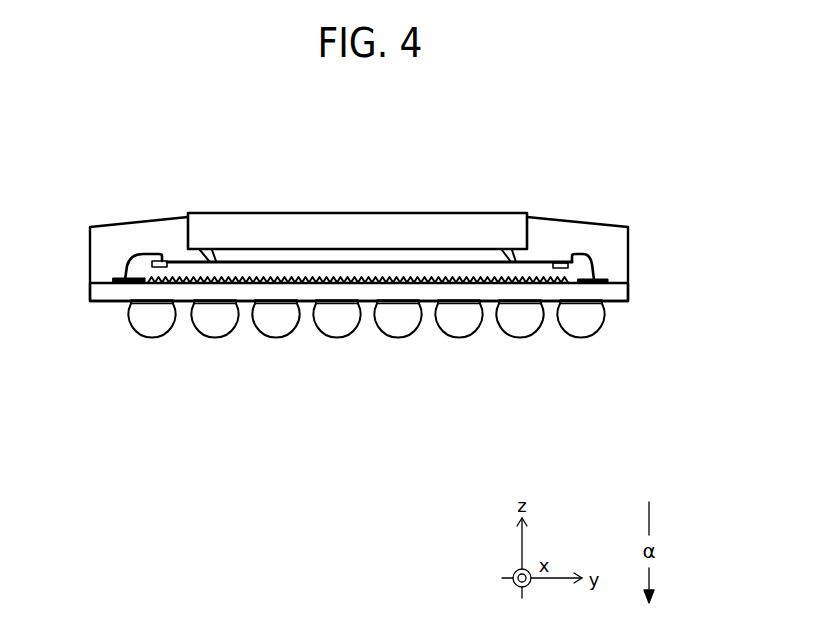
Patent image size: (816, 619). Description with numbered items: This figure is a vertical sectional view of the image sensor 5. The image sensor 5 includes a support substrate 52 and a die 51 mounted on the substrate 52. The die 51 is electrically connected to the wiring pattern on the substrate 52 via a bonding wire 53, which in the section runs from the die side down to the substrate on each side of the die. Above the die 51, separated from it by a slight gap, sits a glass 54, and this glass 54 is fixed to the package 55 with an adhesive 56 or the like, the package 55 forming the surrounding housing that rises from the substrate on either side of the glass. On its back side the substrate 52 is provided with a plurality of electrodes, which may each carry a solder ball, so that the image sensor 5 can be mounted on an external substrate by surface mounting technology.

The image sensor 5 is at (31, 143).
The die 51 is at (285, 260).
The support substrate 52 is at (631, 291).
The bonding wire 53 is at (143, 252).
The glass 54 is at (435, 213).
The package 55 is at (110, 227).
The adhesive 56 is at (212, 250).